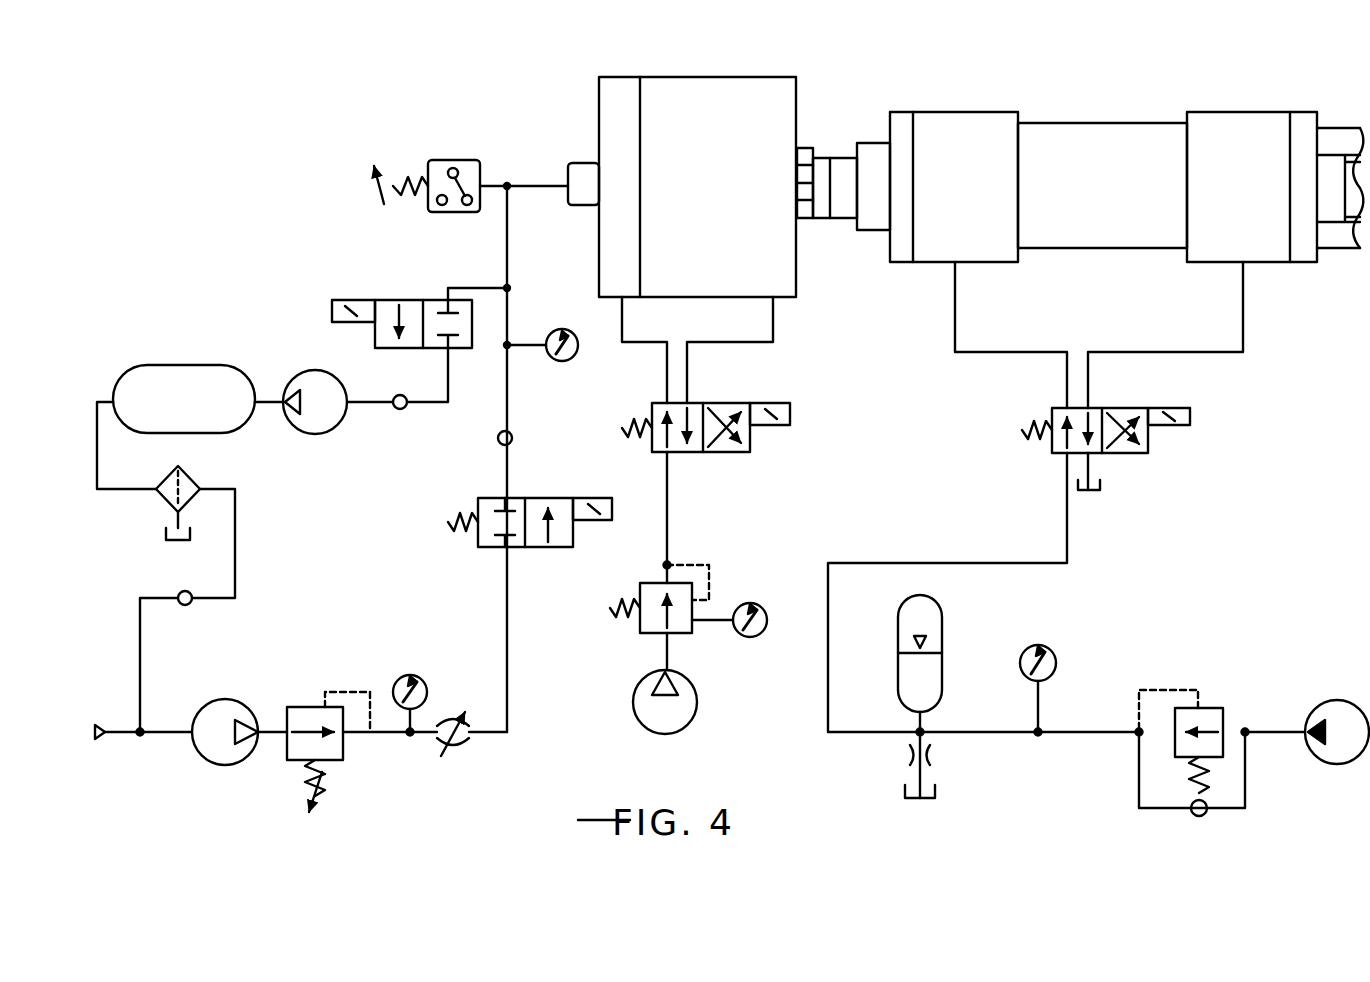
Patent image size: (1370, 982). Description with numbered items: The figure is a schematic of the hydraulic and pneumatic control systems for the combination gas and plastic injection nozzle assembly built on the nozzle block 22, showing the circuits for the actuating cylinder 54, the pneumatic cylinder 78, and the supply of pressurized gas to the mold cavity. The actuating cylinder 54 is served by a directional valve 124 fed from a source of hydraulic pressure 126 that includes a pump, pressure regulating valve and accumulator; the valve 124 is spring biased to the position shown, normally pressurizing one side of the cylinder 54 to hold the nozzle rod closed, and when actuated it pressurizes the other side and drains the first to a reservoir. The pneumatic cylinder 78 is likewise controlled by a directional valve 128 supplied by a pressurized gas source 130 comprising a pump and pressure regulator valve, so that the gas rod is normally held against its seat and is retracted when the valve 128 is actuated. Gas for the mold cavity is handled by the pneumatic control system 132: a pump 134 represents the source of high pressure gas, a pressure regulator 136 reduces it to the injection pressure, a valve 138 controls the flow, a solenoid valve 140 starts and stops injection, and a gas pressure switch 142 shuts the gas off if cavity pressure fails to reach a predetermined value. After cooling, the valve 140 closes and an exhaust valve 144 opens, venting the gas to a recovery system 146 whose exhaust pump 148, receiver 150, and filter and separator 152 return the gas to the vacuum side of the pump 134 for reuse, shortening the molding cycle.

The nozzle block 22 is at (1080, 224).
The actuating cylinder 54 is at (1044, 122).
The pneumatic cylinder 78 is at (714, 70).
The directional valve 124 is at (1148, 440).
The source of hydraulic pressure 126 is at (1188, 672).
The directional valve 128 is at (790, 440).
The pressurized gas source 130 is at (734, 573).
The pneumatic control system 132 is at (205, 741).
The pump 134 is at (227, 699).
The pressure regulator 136 is at (345, 752).
The valve 138 is at (468, 750).
The solenoid valve 140 is at (536, 498).
The gas pressure switch 142 is at (462, 160).
The exhaust valve 144 is at (407, 300).
The recovery system 146 is at (252, 421).
The exhaust pump 148 is at (318, 436).
The receiver 150 is at (200, 435).
The filter and separator 152 is at (162, 503).